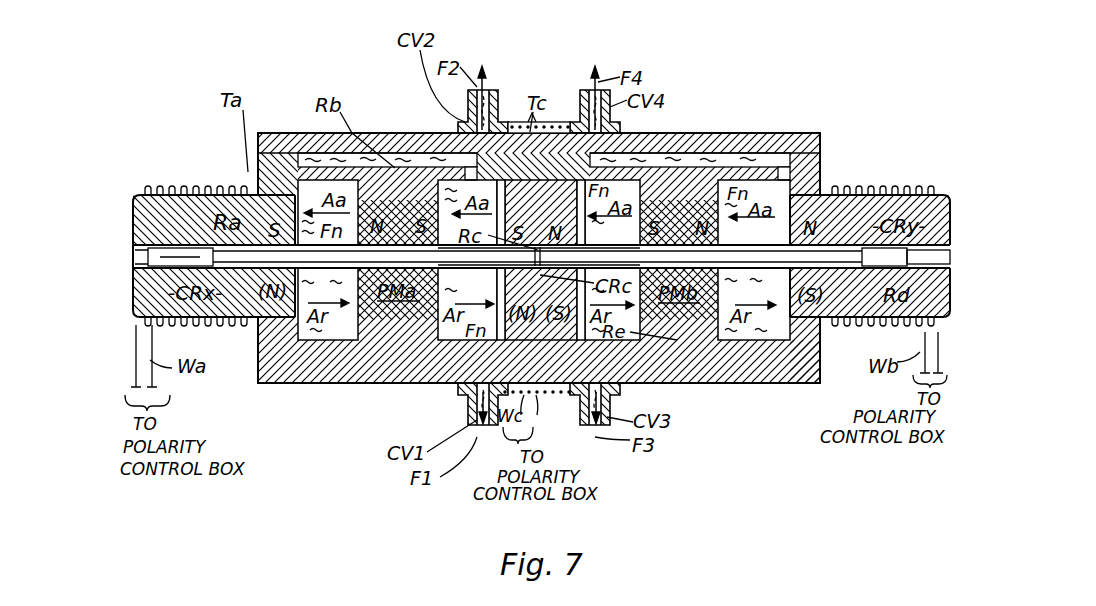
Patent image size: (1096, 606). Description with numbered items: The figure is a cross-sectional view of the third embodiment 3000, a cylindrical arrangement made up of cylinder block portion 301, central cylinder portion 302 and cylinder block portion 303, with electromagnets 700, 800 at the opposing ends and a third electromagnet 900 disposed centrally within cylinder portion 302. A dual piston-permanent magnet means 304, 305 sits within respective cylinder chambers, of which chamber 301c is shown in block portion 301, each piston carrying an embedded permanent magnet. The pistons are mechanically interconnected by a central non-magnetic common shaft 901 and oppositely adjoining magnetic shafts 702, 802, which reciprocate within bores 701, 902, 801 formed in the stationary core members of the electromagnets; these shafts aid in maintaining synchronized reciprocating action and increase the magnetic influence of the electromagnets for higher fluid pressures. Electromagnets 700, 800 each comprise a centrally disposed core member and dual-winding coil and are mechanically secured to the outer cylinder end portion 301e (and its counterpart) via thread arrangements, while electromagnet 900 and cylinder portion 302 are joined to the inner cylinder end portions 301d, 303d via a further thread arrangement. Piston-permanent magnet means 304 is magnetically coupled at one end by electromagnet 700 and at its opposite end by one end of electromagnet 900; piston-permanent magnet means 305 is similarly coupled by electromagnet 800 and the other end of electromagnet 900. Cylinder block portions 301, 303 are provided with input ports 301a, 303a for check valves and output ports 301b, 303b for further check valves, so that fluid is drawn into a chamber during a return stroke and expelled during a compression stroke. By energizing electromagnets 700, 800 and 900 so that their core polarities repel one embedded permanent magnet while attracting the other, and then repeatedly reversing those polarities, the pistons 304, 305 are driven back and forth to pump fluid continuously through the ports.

The third embodiment 3000 is at (318, 62).
The electromagnet 700 is at (176, 157).
The bore 701 is at (133, 197).
The magnetic shaft 702 is at (185, 245).
The electromagnet 800 is at (847, 150).
The bore 801 is at (955, 240).
The magnetic shaft 802 is at (780, 245).
The third electromagnet 900 is at (557, 208).
The non-magnetic common shaft 901 is at (583, 242).
The bore 902 is at (497, 277).
The cylinder block portion 301 is at (347, 383).
The input port 301a is at (463, 395).
The output port 301b is at (405, 160).
The cylinder chamber 301c is at (260, 387).
The inner cylinder end portion 301d is at (510, 122).
The cylinder end portion 301e is at (268, 186).
The cylinder portion 302 is at (518, 133).
The cylinder block portion 303 is at (702, 132).
The input port 303a is at (625, 388).
The output port 303b is at (753, 157).
The inner cylinder end portion 303d is at (563, 133).
The piston-permanent magnet means 304 is at (445, 132).
The piston-permanent magnet means 305 is at (633, 132).